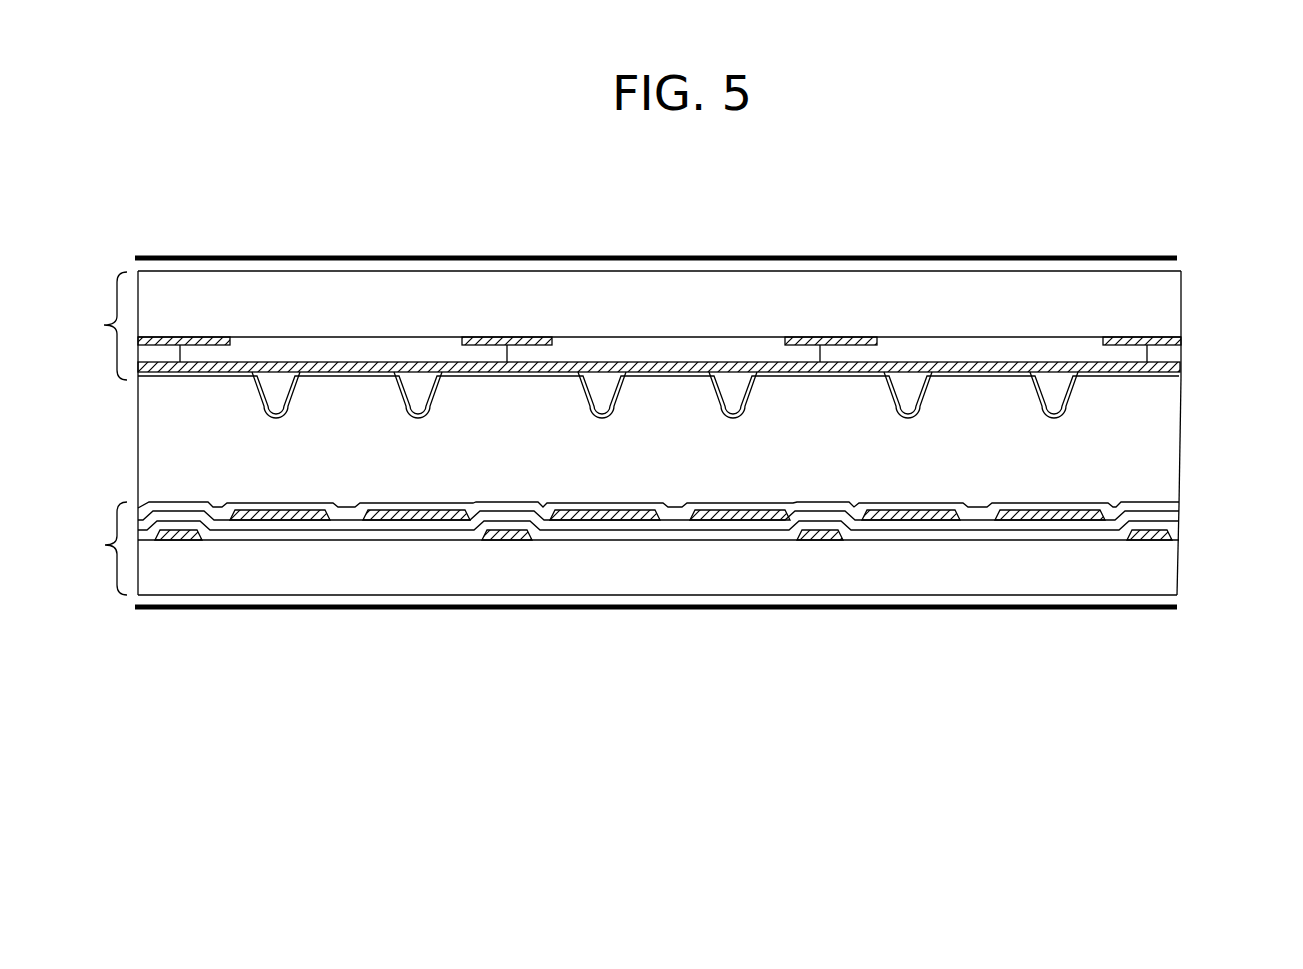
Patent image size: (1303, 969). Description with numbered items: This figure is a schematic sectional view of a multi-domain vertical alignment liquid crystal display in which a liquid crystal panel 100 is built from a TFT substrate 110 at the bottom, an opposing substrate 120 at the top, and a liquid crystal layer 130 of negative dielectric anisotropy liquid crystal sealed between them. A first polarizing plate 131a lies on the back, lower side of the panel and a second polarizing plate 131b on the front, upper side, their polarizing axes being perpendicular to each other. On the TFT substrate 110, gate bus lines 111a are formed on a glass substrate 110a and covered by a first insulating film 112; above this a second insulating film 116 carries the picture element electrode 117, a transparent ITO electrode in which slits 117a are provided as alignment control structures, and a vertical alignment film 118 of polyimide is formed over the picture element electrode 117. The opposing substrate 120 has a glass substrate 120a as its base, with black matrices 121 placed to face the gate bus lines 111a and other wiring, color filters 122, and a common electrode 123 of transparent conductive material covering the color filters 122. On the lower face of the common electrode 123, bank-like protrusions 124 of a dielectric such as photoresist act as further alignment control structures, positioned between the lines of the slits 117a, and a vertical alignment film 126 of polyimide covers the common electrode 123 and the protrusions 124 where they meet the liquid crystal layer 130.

The liquid crystal panel 100 is at (118, 258).
The TFT substrate 110 is at (611, 548).
The glass substrate 110a is at (1173, 563).
The gate bus line 111a is at (178, 541).
The first insulating film 112 is at (905, 532).
The second insulating film 116 is at (1170, 513).
The picture element electrode 117 is at (284, 510).
The slit 117a is at (350, 512).
The vertical alignment film 118 is at (178, 504).
The opposing substrate 120 is at (612, 325).
The glass substrate 120a is at (1173, 300).
The black matrix 121 is at (188, 337).
The color filter 122 is at (332, 342).
The common electrode 123 is at (1173, 367).
The protrusion 124 is at (277, 385).
The vertical alignment film 126 is at (782, 377).
The liquid crystal layer 130 is at (150, 427).
The first polarizing plate 131a is at (227, 611).
The second polarizing plate 131b is at (228, 257).